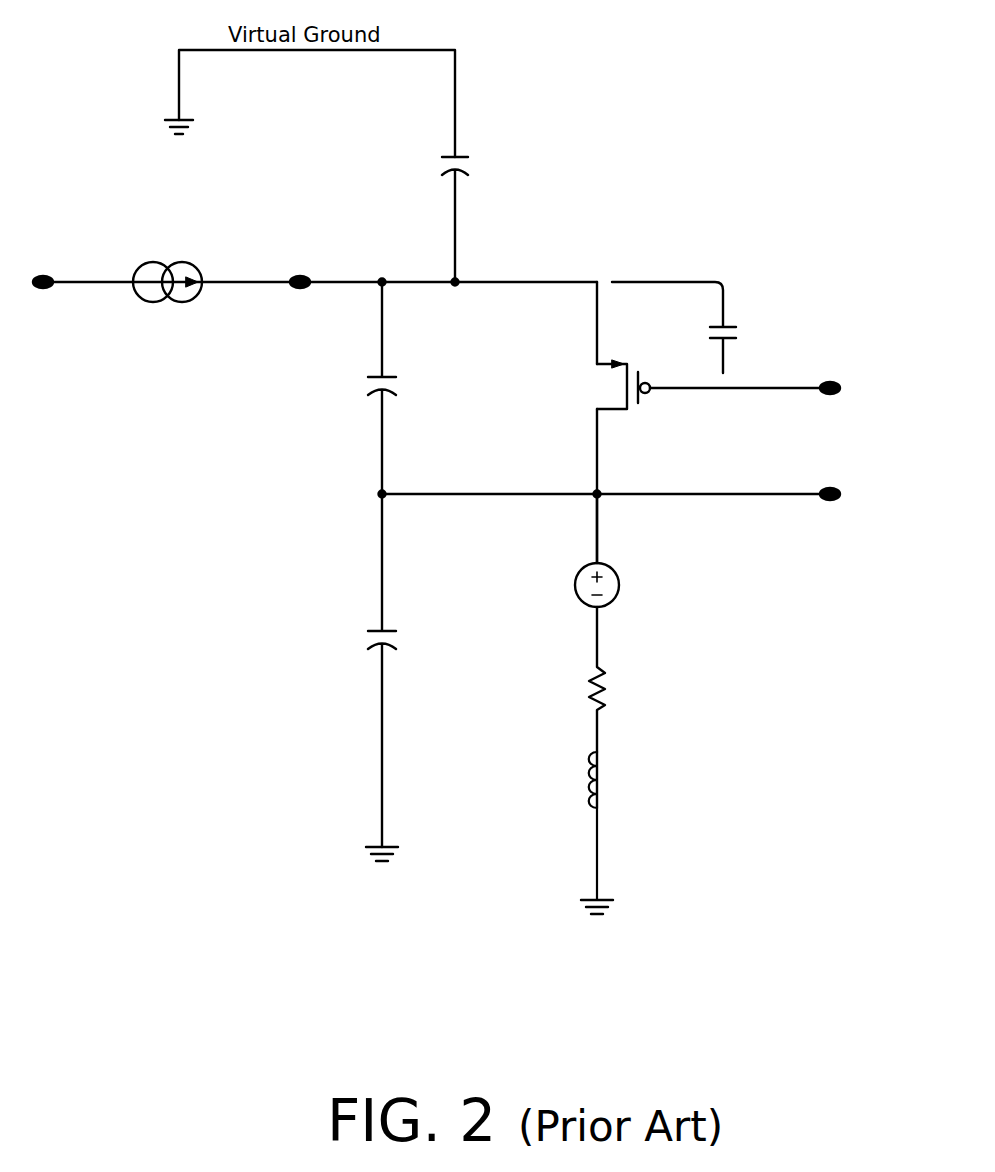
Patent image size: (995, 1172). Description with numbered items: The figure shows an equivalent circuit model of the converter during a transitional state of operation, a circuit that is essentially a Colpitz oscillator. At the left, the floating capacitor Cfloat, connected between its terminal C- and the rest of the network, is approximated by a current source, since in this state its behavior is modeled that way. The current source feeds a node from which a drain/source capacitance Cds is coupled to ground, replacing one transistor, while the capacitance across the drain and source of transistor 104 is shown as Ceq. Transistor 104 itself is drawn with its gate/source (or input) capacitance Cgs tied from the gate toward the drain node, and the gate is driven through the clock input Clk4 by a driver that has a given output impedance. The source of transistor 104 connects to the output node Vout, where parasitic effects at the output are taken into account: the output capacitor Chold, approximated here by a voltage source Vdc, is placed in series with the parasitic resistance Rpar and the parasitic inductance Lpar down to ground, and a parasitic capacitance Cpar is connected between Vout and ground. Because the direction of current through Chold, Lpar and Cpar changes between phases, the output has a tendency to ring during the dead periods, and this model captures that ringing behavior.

The transistor 104 is at (665, 413).
The drain/source capacitance Cds is at (476, 219).
The gate/source capacitance Cgs is at (694, 327).
The capacitance across drain and source of transistor Ceq is at (401, 388).
The parasitic capacitance Cpar is at (405, 677).
The capacitor Chold is at (625, 528).
The capacitor Cfloat is at (167, 263).
The DC voltage source Vdc = Vload Vdc is at (648, 585).
The parasitic resistance Rpar is at (625, 679).
The parasitic inductance Lpar is at (562, 826).
The output Vout is at (614, 479).
The clock 4 input Clk4 is at (751, 375).
The negative capacitor terminal C- is at (46, 265).